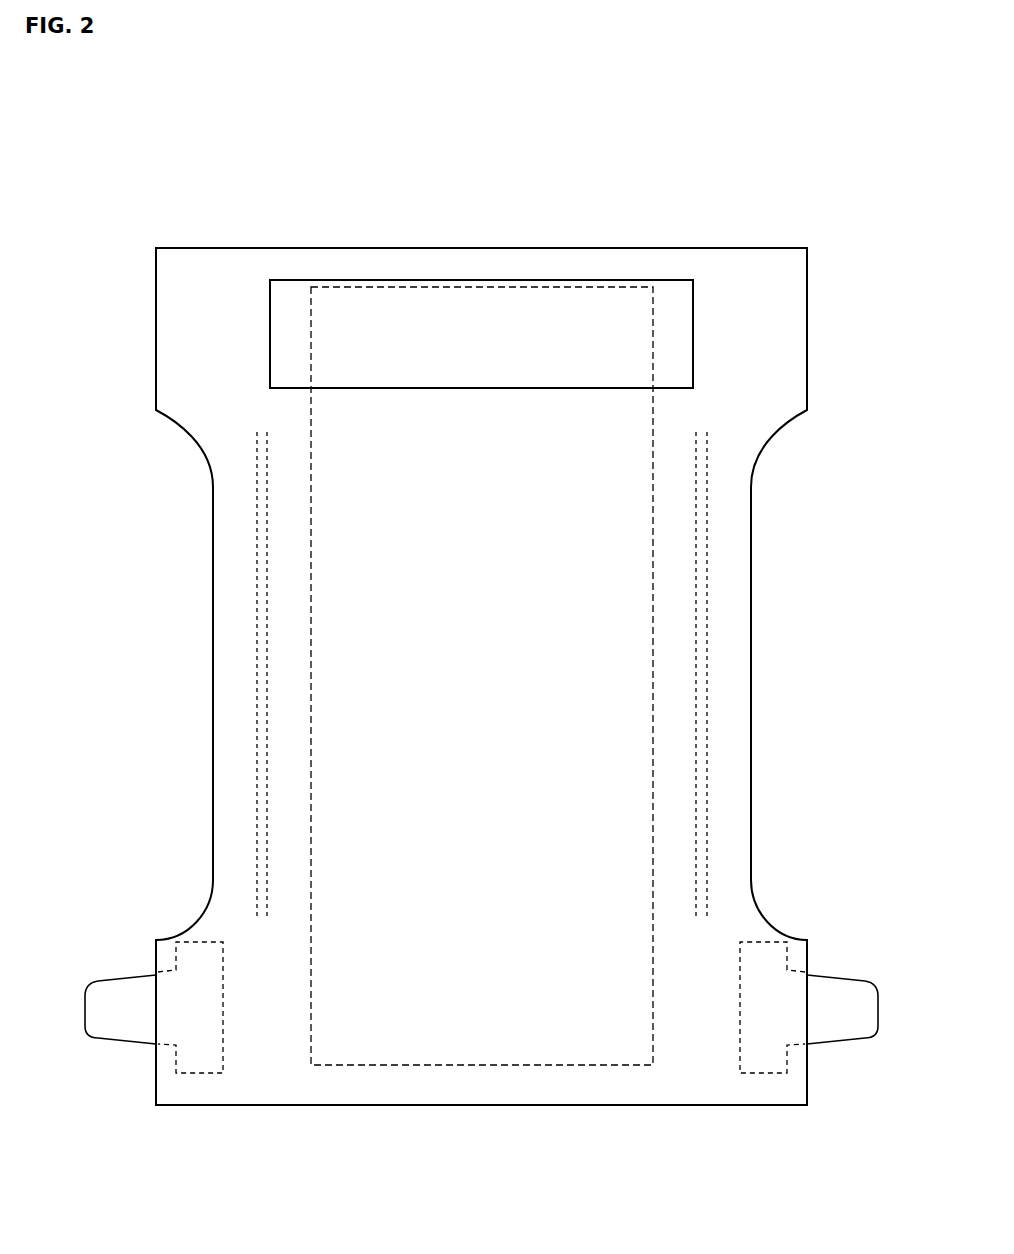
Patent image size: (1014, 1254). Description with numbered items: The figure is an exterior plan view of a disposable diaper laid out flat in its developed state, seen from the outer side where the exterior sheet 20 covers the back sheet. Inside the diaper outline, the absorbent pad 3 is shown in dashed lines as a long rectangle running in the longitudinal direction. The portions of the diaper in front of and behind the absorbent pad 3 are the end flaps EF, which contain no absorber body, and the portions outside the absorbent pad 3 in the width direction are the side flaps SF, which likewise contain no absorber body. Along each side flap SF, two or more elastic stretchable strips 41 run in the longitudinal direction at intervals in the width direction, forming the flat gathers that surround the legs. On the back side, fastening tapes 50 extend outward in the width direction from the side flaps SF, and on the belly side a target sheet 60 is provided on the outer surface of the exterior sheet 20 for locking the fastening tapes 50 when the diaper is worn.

The exterior sheet 20 is at (410, 262).
The target sheet 60 is at (604, 282).
The absorbent pad 3 is at (413, 1057).
The elastic stretchable strips 41 is at (257, 678).
The fastening tapes 50 is at (107, 990).
The side flaps SF is at (178, 336).
The end flaps EF is at (500, 260).